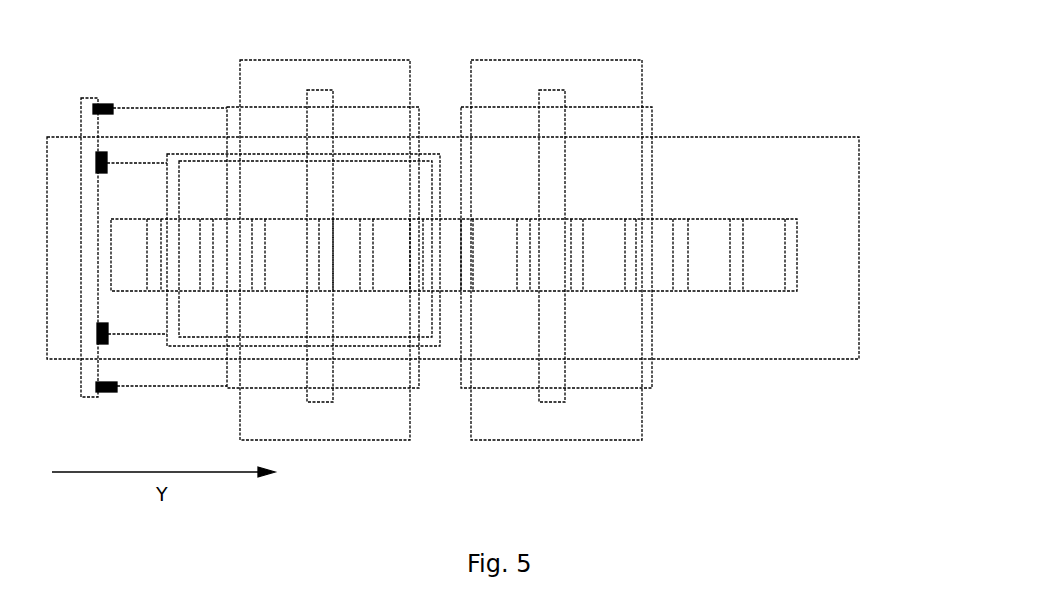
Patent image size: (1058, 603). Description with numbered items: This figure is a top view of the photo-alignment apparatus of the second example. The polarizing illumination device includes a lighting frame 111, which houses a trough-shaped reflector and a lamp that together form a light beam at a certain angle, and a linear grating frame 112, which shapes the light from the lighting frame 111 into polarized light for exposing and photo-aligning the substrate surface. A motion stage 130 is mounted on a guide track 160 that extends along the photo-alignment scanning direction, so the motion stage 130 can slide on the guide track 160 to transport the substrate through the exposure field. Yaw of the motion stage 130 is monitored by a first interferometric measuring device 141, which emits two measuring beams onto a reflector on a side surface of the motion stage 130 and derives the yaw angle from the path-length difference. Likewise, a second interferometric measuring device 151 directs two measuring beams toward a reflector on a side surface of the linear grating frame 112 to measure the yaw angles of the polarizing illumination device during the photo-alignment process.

The lighting frame 111 is at (587, 59).
The linear grating frame 112 is at (655, 117).
The motion stage 130 is at (185, 154).
The first interferometric measuring device 141 is at (112, 157).
The second interferometric measuring device 151 is at (110, 103).
The guide track 160 is at (791, 256).